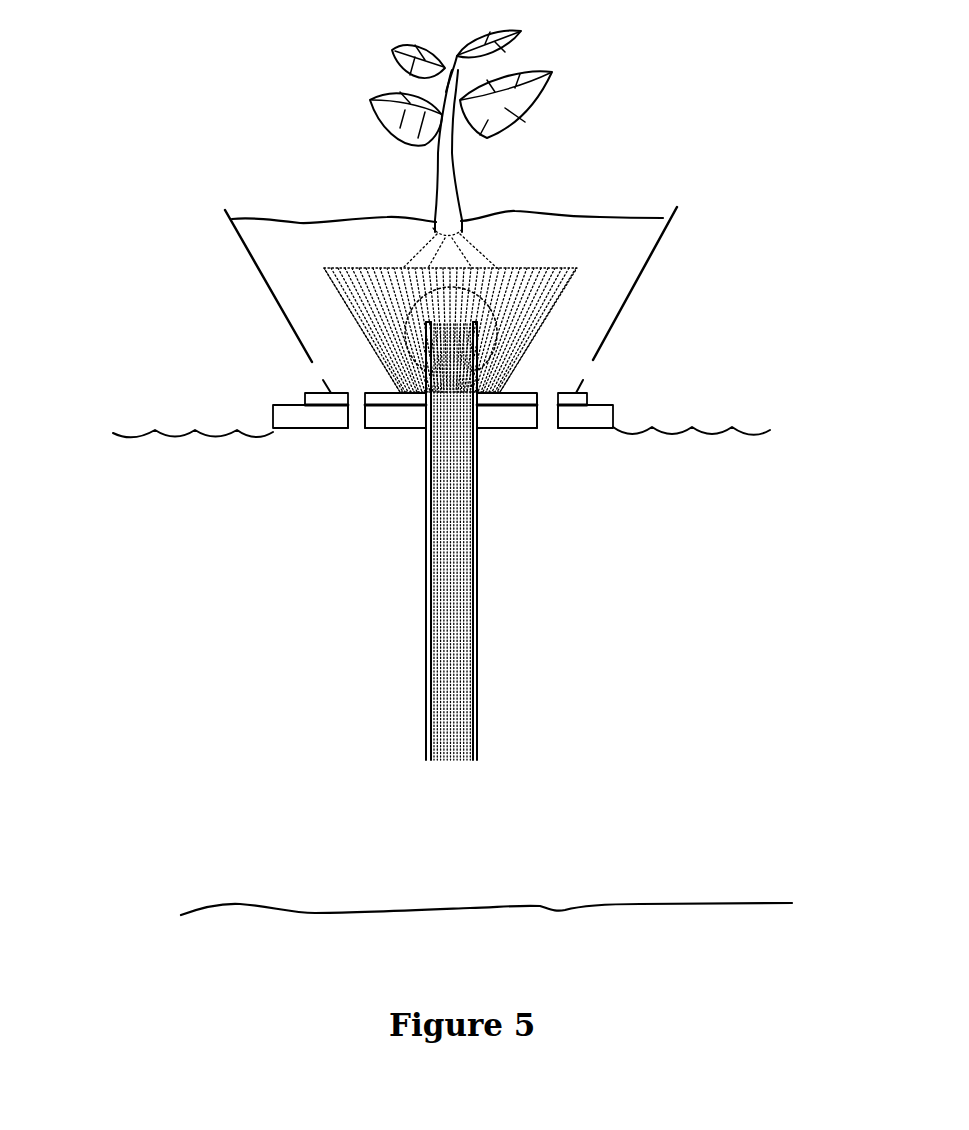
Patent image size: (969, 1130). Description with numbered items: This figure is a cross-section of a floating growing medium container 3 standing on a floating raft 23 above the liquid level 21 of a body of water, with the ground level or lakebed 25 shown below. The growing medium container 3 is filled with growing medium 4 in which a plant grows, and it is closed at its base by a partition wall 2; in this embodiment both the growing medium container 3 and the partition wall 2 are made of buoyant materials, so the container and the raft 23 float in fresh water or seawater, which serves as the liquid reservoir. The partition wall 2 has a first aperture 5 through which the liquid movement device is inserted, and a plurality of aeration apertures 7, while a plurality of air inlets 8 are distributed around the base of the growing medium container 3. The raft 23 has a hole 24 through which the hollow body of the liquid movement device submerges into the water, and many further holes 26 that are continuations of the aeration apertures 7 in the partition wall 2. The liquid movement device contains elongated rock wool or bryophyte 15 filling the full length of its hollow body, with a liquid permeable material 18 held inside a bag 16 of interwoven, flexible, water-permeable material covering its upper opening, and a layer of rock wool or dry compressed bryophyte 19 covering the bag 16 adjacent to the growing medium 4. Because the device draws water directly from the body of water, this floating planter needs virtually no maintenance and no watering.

The partition wall 2 is at (303, 397).
The growing medium container 3 is at (282, 317).
The growing medium 4 is at (302, 253).
The first aperture in partition wall 5 is at (480, 395).
The aeration aperture in partition wall 7 is at (545, 398).
The air inlet at the base of growing medium container 8 is at (590, 370).
The rock wool/bryophyte inside the hollow body 15 is at (448, 543).
The bag of interwoven material 16 is at (490, 307).
The liquid permeable material 18 is at (483, 332).
The layer of rock wool/dry compressed bryophyte 19 is at (523, 280).
The liquid level 21 is at (115, 427).
The floating raft 23 is at (325, 420).
The hole in floating raft 24 is at (480, 422).
The ground level/lakebed 25 is at (338, 912).
The hole in the raft 26 is at (360, 428).